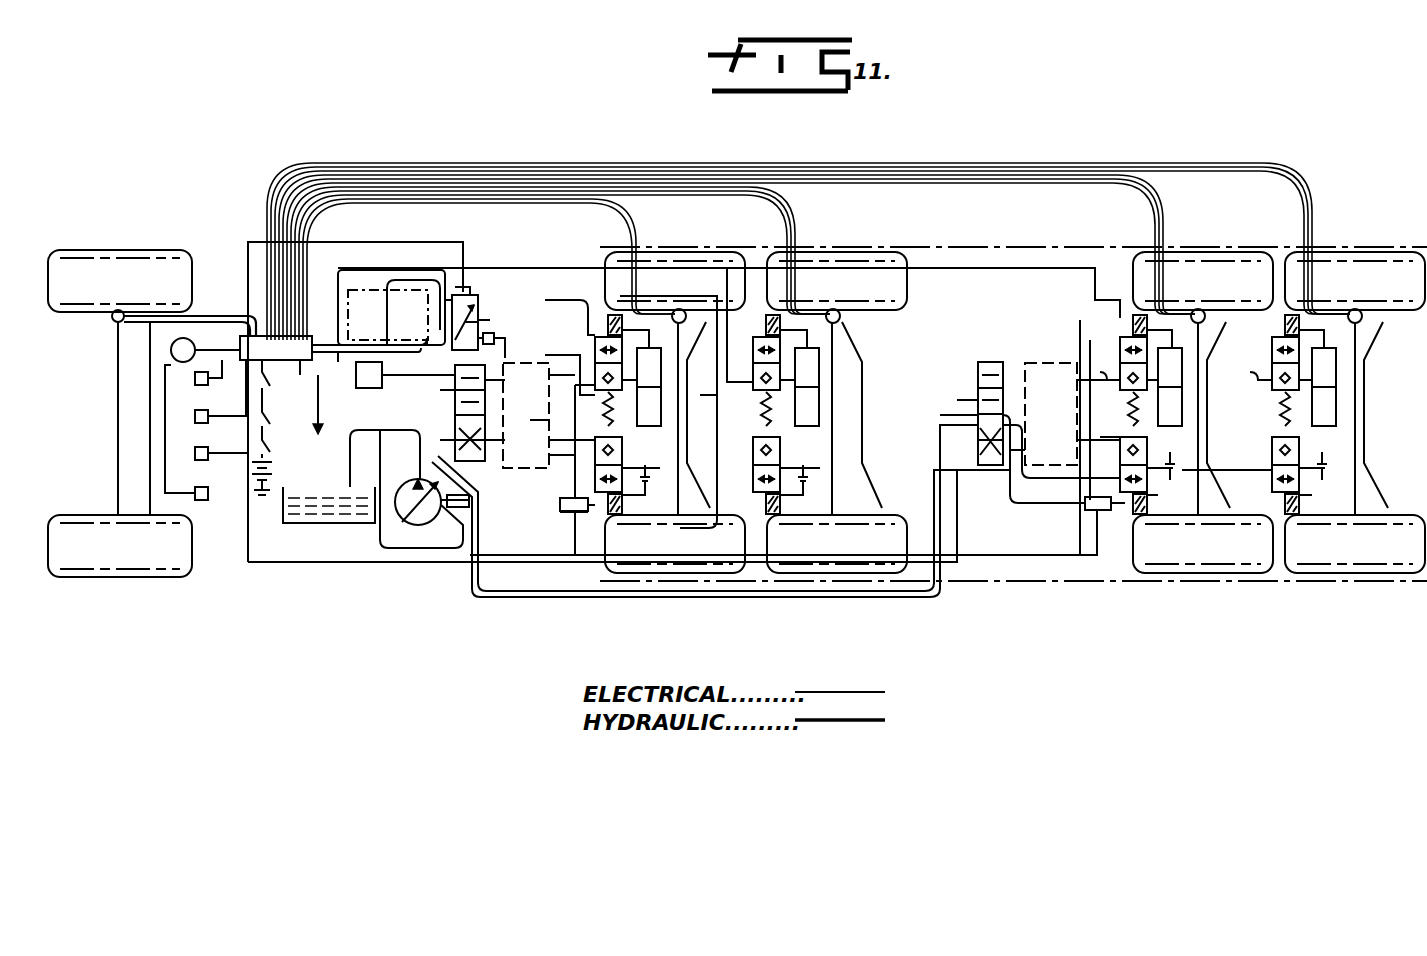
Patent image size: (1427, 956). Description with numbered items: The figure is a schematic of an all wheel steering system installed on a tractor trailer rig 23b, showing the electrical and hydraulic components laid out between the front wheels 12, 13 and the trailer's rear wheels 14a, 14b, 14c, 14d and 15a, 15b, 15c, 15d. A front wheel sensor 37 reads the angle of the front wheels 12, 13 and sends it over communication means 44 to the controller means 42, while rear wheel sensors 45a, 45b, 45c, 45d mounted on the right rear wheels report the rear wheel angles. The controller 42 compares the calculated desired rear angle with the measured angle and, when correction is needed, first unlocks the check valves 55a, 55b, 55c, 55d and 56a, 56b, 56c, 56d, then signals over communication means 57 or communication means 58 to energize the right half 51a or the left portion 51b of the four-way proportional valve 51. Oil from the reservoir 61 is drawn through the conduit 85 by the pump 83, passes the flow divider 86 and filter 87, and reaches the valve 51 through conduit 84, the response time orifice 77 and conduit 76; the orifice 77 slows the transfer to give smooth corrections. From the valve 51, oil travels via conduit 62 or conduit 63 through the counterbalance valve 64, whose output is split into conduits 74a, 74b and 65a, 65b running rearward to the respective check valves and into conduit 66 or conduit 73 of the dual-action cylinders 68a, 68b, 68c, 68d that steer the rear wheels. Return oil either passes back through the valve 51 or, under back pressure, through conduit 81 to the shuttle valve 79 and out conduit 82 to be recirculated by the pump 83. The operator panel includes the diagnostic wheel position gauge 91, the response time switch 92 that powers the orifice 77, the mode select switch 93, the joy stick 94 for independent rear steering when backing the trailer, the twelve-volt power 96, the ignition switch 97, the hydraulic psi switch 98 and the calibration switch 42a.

The front wheel 12 is at (113, 252).
The front wheel 13 is at (120, 578).
The rear wheel 14a is at (655, 258).
The rear wheel 14b is at (905, 280).
The rear wheel 14c is at (1200, 258).
The rear wheel 14d is at (1348, 258).
The rear wheel 15a is at (705, 584).
The rear wheel 15b is at (892, 528).
The rear wheel 15c is at (1208, 562).
The rear wheel 15d is at (1352, 562).
The tractor trailer rig 23b is at (975, 248).
The front wheel sensor 37 is at (113, 322).
The controller means 42 is at (258, 334).
The calibration switch 42a is at (195, 378).
The communication means 44 is at (197, 300).
The rear wheel sensor 45a is at (690, 310).
The rear wheel sensor 45b is at (852, 325).
The rear wheel sensor 45c is at (1204, 310).
The rear wheel sensor 45d is at (1358, 310).
The four-way proportional valve 51 is at (455, 430).
The right half of four-way valve 51a is at (485, 333).
The left portion of four-way valve 51b is at (536, 426).
The check valve 55a is at (590, 330).
The check valve 55b is at (760, 390).
The check valve 55c is at (1120, 343).
The check valve 55d is at (1260, 385).
The check valve 56a is at (624, 462).
The check valve 56b is at (780, 460).
The check valve 56c is at (1135, 520).
The check valve 56d is at (1299, 460).
The communication means 57 is at (305, 350).
The communication means 58 is at (272, 380).
The reservoir 61 is at (340, 523).
The conduit 62 is at (322, 430).
The conduit 63 is at (480, 510).
The counterbalance valve 64 is at (522, 360).
The conduit 65a is at (590, 430).
The conduit 65b is at (688, 530).
The conduit 66 is at (618, 430).
The dual-action cylinder 68a is at (665, 420).
The dual-action cylinder 68b is at (820, 400).
The dual-action cylinder 68c is at (1175, 430).
The dual-action cylinder 68d is at (1340, 400).
The conduit 73 is at (703, 379).
The conduit 74a is at (595, 345).
The conduit 74b is at (560, 307).
The conduit 76 is at (430, 380).
The response time orifice 77 is at (478, 300).
The shuttle valve 79 is at (572, 512).
The conduit 81 is at (590, 555).
The conduit 82 is at (560, 510).
The pump 83 is at (425, 525).
The conduit 84 is at (408, 280).
The conduit 85 is at (378, 548).
The flow divider 86 is at (356, 380).
The filter 87 is at (385, 290).
The diagnostic wheel position gauge 91 is at (171, 350).
The response time switch 92 is at (203, 500).
The mode select switch 93 is at (202, 447).
The joy stick 94 is at (195, 416).
The 12-volt power 96 is at (274, 470).
The ignition switch 97 is at (272, 440).
The hydraulic psi switch 98 is at (272, 412).